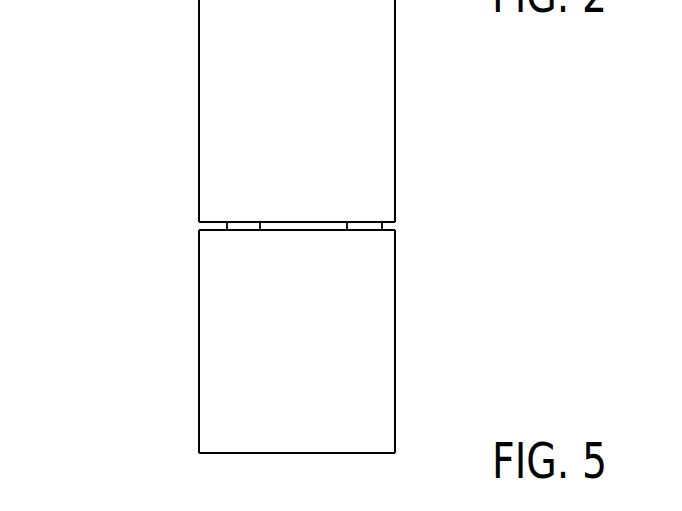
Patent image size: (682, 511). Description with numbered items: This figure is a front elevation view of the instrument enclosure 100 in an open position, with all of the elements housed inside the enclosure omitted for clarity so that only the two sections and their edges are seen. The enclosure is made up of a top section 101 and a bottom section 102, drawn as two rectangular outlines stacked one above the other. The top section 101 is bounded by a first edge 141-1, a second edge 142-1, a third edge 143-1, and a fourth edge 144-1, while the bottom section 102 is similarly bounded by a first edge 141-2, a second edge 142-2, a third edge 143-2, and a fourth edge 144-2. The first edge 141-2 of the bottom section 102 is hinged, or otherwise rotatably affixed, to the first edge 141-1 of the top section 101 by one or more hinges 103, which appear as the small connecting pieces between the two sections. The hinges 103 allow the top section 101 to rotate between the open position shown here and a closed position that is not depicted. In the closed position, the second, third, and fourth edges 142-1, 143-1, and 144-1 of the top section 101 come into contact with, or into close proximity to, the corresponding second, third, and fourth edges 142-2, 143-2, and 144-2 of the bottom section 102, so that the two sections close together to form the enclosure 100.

The instrument enclosure 100 is at (206, 226).
The top section 101 is at (297, 111).
The bottom section 102 is at (297, 341).
The hinges 103 is at (245, 224).
The first edge of top section 141-1 is at (316, 218).
The first edge of bottom section 141-2 is at (316, 452).
The second edge of top section 142-1 is at (286, 0).
The second edge of bottom section 142-2 is at (282, 231).
The third edge of top section 143-1 is at (199, 93).
The third edge of bottom section 143-2 is at (199, 326).
The fourth edge of top section 144-1 is at (395, 111).
The fourth edge of bottom section 144-2 is at (395, 344).